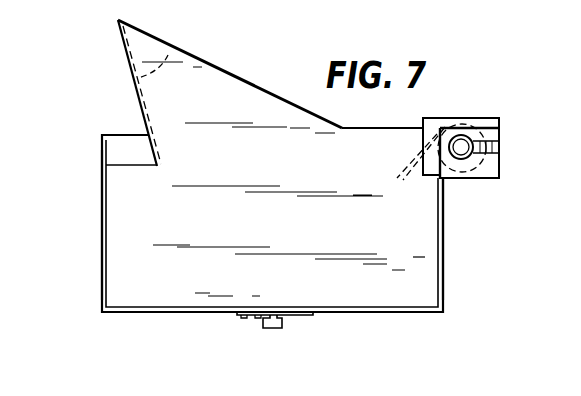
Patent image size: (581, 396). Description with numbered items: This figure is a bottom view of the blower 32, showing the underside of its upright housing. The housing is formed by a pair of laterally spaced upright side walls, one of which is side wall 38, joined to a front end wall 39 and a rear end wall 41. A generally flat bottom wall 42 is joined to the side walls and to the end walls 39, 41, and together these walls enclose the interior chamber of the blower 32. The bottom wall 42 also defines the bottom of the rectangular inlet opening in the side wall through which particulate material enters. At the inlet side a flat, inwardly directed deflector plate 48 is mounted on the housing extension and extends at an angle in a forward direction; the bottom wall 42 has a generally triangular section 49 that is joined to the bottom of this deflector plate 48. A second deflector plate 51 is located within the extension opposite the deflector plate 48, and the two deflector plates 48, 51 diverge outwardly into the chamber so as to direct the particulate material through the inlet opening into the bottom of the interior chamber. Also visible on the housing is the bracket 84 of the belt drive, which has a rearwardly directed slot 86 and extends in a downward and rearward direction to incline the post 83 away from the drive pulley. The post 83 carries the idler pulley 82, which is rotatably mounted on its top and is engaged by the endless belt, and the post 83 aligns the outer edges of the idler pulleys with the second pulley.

The blower 32 is at (90, 229).
The side wall 38 is at (352, 312).
The front end wall 39 is at (102, 265).
The rear end wall 41 is at (443, 229).
The bottom wall 42 is at (413, 257).
The deflector plate 48 is at (168, 55).
The triangular section 49 is at (210, 98).
The second deflector plate 51 is at (405, 167).
The idler pulley 82 is at (490, 126).
The post 83 is at (463, 145).
The bracket 84 is at (448, 126).
The slot 86 is at (488, 148).